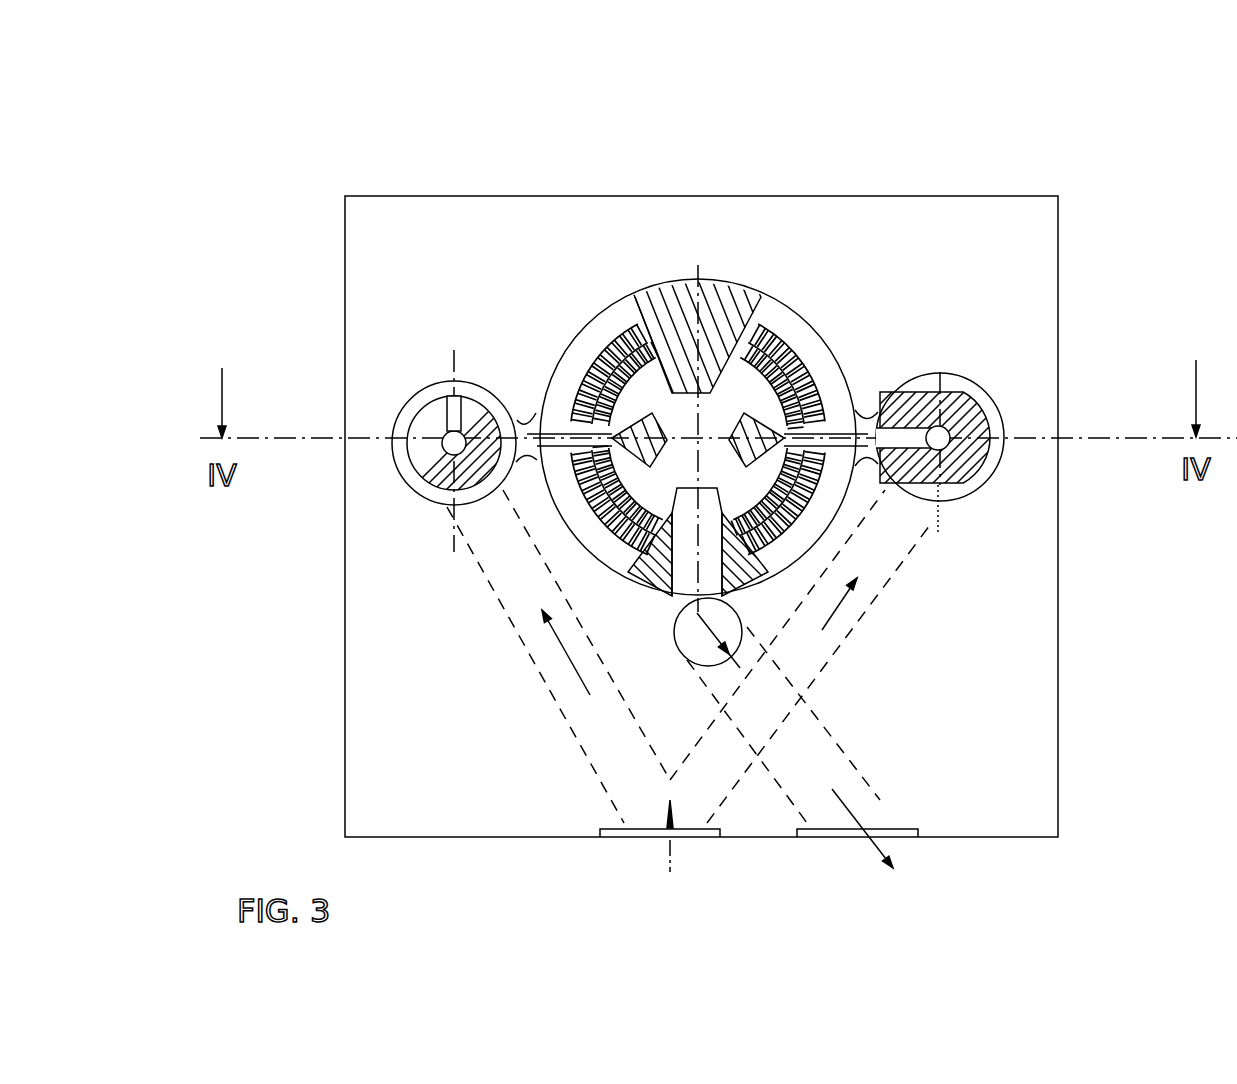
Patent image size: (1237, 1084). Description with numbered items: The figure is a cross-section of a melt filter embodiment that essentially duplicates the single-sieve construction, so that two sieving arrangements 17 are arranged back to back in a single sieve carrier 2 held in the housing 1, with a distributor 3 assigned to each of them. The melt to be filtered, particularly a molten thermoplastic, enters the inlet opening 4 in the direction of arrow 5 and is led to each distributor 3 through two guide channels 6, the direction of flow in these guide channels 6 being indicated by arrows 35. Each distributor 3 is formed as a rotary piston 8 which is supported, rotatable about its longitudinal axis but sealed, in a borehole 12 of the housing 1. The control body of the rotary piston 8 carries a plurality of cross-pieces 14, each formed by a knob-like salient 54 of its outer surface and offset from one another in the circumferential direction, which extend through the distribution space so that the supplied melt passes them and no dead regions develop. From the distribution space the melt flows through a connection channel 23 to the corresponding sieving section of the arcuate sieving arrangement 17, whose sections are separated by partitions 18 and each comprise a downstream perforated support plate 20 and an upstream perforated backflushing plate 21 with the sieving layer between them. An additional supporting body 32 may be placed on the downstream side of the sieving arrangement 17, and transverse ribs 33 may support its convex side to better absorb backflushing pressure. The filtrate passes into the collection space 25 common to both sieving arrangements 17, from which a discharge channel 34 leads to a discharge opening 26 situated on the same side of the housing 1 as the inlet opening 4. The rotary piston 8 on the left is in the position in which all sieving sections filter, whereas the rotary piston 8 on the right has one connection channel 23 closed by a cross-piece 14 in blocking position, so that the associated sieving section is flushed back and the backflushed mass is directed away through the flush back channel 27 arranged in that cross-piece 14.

The housing 1 is at (1062, 706).
The sieve carrier 2 is at (760, 290).
The distributor 3 is at (388, 467).
The inlet opening 4 is at (645, 812).
The arrow 5 is at (672, 847).
The guide channels 6 is at (522, 567).
The rotary piston 8 is at (418, 393).
The borehole 12 is at (1000, 470).
The cross-pieces 14 is at (525, 433).
The sieving arrangement 17 is at (594, 333).
The partitions 18 is at (827, 390).
The perforated support plate 20 is at (768, 330).
The perforated backflushing plate 21 is at (585, 497).
The connection channel 23 is at (543, 437).
The collection space 25 is at (712, 456).
The discharge opening 26 is at (865, 807).
The flush back channel 27 is at (452, 392).
The supporting body 32 is at (665, 410).
The transverse ribs 33 is at (555, 425).
The discharge channel 34 is at (685, 557).
The arrows 35 is at (565, 652).
The knob-like salient 54 is at (482, 395).